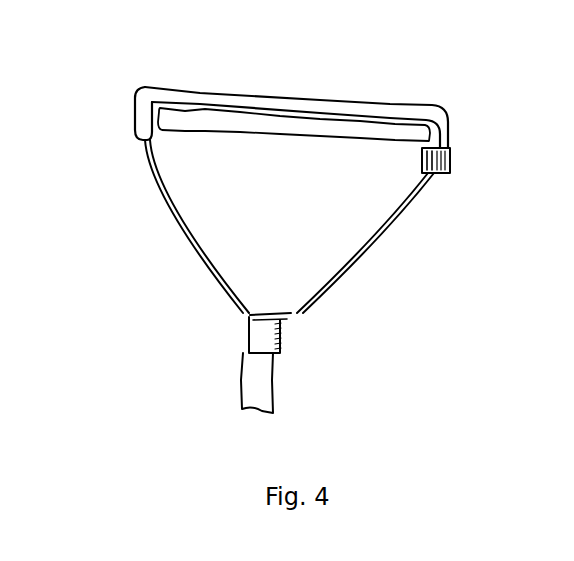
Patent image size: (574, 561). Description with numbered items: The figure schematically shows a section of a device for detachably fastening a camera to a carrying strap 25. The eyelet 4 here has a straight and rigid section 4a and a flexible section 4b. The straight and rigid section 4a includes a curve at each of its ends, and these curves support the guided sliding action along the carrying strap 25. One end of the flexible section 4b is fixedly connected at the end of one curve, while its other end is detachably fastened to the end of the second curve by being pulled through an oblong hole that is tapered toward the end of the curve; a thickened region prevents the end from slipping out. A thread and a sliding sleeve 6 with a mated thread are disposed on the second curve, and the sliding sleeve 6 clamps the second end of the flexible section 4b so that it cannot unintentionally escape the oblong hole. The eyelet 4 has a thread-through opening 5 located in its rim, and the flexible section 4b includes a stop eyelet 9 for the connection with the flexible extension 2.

The eyelet 4 is at (84, 180).
The straight and rigid section 4a is at (323, 96).
The flexible section 4b is at (330, 278).
The carrying strap 25 is at (196, 120).
The sliding sleeve 6 is at (450, 160).
The thread-through opening 5 is at (453, 177).
The stop eyelet 9 is at (283, 332).
The flexible extension 2 is at (263, 340).